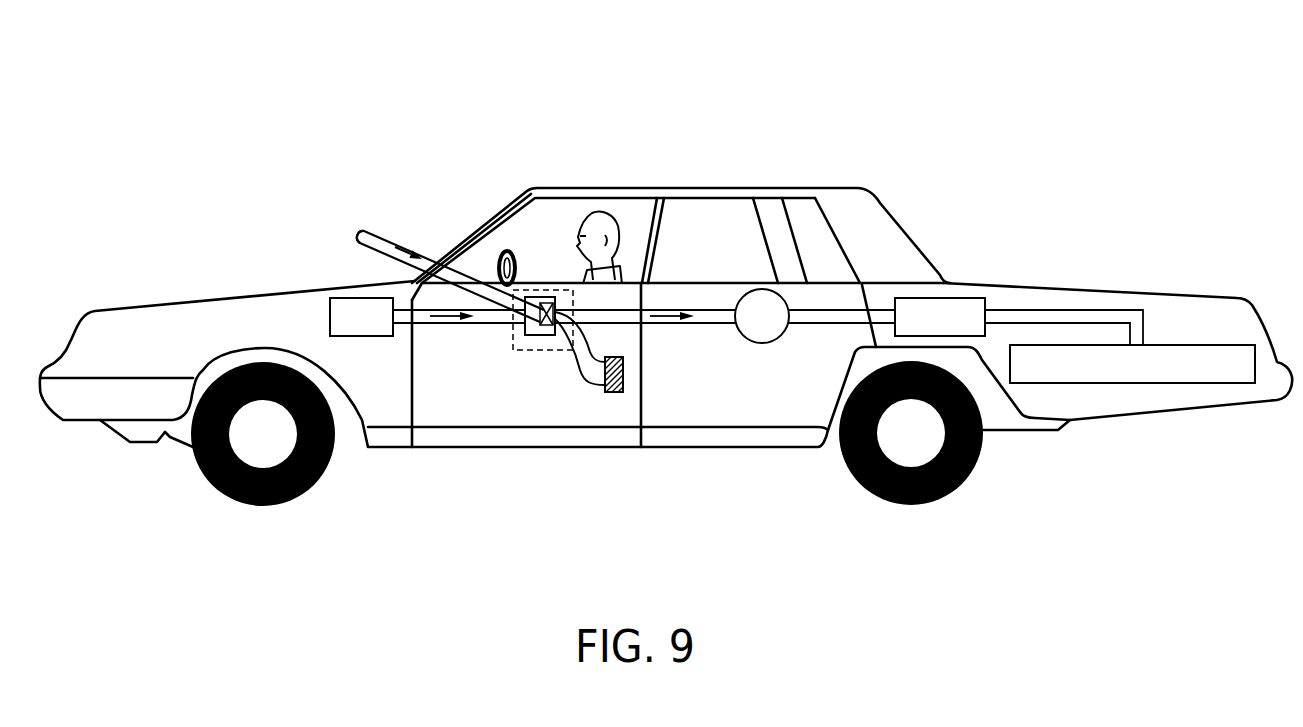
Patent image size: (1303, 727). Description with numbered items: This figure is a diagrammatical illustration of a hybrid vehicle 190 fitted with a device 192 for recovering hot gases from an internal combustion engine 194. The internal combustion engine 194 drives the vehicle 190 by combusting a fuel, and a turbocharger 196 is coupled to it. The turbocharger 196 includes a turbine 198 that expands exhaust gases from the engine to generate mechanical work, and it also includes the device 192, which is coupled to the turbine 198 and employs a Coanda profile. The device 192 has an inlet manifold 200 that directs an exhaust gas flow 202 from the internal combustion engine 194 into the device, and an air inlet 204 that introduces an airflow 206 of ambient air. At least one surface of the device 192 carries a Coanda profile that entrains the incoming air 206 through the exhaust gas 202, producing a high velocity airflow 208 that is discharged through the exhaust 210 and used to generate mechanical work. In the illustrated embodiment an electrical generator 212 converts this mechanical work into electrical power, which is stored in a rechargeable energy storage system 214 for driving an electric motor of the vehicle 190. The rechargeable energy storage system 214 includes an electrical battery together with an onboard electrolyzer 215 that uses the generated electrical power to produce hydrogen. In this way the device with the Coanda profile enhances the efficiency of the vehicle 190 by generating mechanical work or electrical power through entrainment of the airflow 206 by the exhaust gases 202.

The hybrid vehicle 190 is at (1020, 85).
The device 192 is at (573, 298).
The internal combustion engine 194 is at (330, 313).
The turbocharger 196 is at (555, 350).
The turbine 198 is at (533, 337).
The inlet manifold 200 is at (476, 326).
The exhaust gas flow 202 is at (447, 324).
The air inlet 204 is at (377, 252).
The airflow 206 is at (384, 245).
The high velocity airflow 208 is at (691, 325).
The exhaust 210 is at (590, 385).
The electrical generator 212 is at (762, 344).
The rechargeable energy storage system 214 is at (968, 298).
The onboard electrolyzer 215 is at (1185, 384).